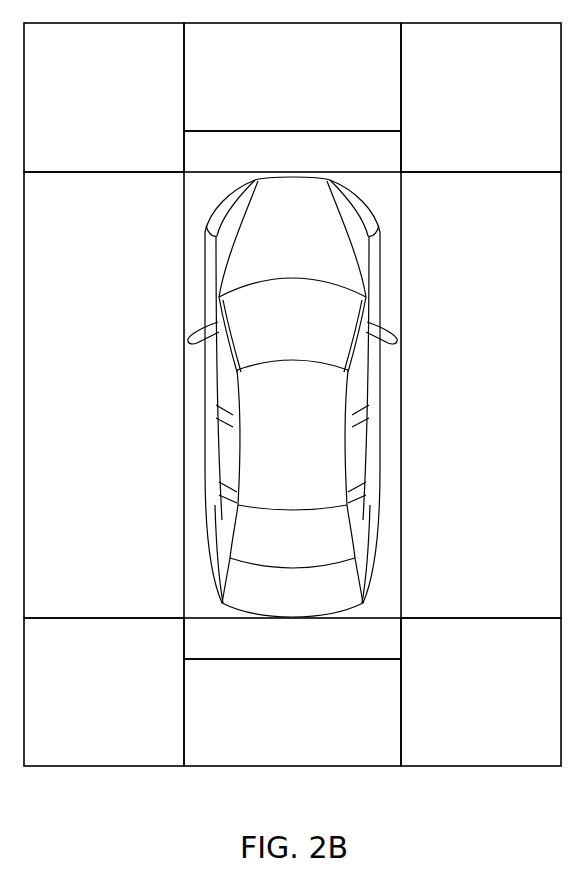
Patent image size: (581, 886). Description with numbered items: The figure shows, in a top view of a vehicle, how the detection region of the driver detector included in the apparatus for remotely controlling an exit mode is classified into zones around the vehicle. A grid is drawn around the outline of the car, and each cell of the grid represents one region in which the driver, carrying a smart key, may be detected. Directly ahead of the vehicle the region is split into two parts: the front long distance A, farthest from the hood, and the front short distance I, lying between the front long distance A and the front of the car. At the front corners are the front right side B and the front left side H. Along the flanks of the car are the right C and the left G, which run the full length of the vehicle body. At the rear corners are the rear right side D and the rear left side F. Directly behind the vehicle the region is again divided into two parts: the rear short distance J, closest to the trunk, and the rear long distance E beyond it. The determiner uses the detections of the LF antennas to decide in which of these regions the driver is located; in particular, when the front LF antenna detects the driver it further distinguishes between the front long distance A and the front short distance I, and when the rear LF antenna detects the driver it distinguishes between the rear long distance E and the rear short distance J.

The front long distance A is at (292, 77).
The front right side B is at (481, 97).
The right C is at (481, 395).
The rear right side D is at (481, 692).
The rear long distance E is at (292, 712).
The rear left side F is at (104, 692).
The left G is at (104, 395).
The front left side H is at (104, 97).
The front short distance I is at (292, 151).
The rear short distance J is at (292, 638).